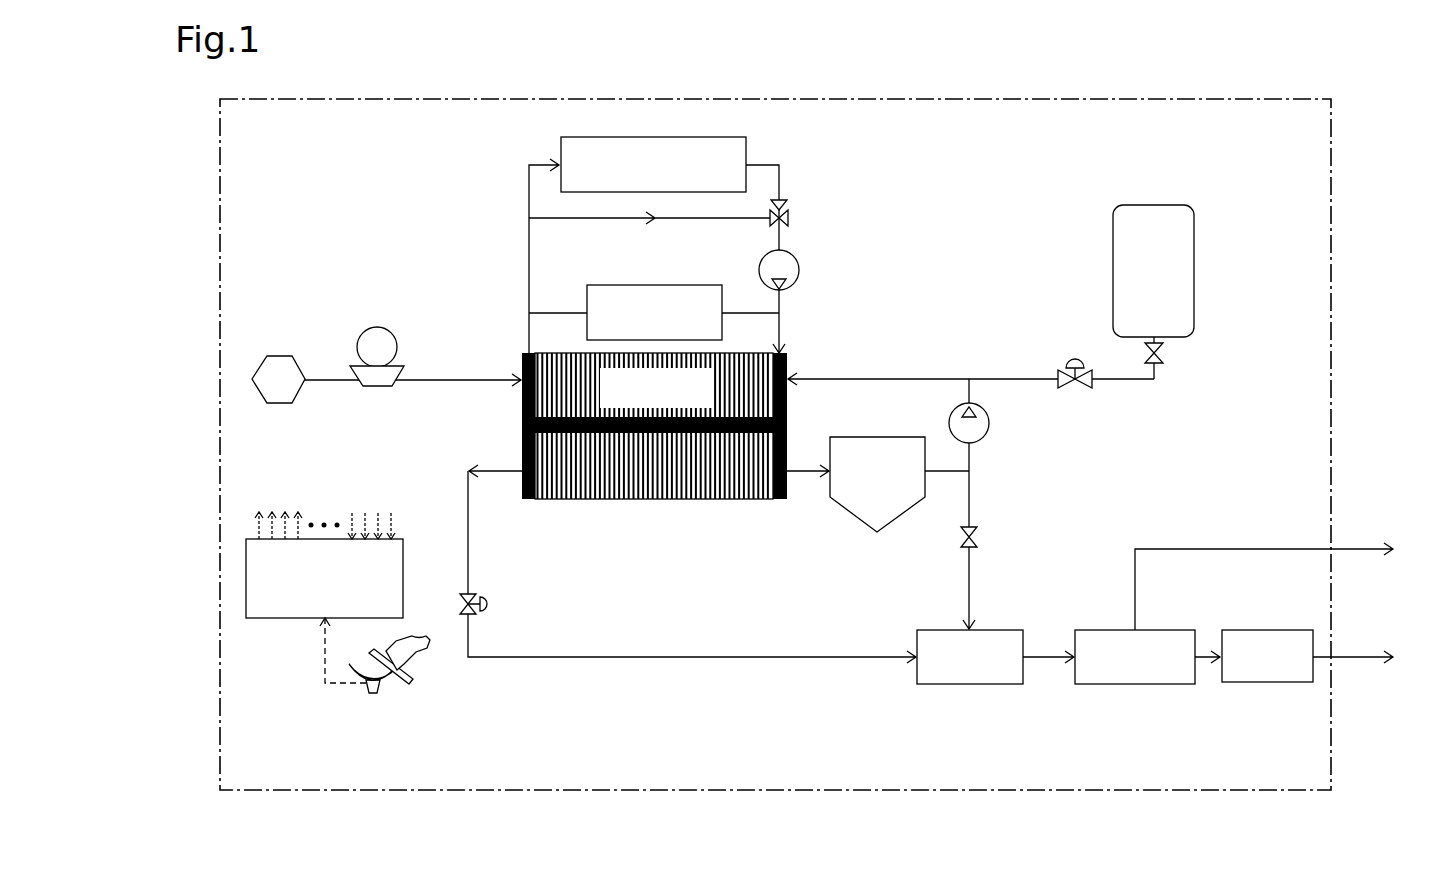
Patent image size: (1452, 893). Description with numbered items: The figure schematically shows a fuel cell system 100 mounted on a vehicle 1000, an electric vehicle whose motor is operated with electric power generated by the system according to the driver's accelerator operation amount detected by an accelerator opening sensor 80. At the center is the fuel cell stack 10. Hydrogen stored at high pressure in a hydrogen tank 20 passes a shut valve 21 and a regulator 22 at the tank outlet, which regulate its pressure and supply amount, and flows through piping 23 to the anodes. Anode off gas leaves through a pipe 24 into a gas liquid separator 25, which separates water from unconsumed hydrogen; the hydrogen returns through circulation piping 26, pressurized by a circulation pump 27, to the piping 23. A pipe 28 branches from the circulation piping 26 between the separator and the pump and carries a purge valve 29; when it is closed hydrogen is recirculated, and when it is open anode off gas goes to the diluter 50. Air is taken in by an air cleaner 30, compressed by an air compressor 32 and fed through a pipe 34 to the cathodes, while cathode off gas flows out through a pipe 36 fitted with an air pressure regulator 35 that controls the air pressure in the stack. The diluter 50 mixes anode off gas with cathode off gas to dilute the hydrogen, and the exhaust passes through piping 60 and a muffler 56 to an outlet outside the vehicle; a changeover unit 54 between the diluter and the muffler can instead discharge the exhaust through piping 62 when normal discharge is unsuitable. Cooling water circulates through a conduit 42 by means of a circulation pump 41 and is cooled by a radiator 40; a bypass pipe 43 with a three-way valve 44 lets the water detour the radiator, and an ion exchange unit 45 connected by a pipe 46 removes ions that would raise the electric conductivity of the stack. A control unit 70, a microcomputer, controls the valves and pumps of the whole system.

The vehicle 1000 is at (1236, 97).
The fuel cell system 100 is at (318, 166).
The fuel cell stack 10 is at (655, 500).
The hydrogen tank 20 is at (1195, 272).
The shut valve 21 is at (1159, 352).
The regulator 22 is at (1078, 390).
The piping 23 is at (932, 378).
The pipe 24 is at (804, 470).
The gas liquid separator 25 is at (880, 436).
The circulation piping 26 is at (970, 455).
The circulation pump 27 is at (989, 424).
The pipe 28 is at (970, 494).
The purge valve 29 is at (978, 535).
The air cleaner 30 is at (282, 356).
The air compressor 32 is at (380, 388).
The pipe 34 is at (430, 378).
The air pressure regulator 35 is at (490, 604).
The pipe 36 is at (630, 656).
The radiator 40 is at (746, 152).
The circulation pump 41 is at (799, 272).
The conduit 42 is at (529, 262).
The bypass pipe 43 is at (592, 222).
The three-way valve 44 is at (790, 212).
The ion exchange unit 45 is at (656, 284).
The pipe 46 is at (726, 312).
The diluter 50 is at (968, 685).
The changeover unit 54 is at (1112, 685).
The muffler 56 is at (1260, 684).
The piping 60 is at (1053, 656).
The piping 62 is at (1368, 548).
The control unit 70 is at (405, 580).
The accelerator opening sensor 80 is at (372, 695).